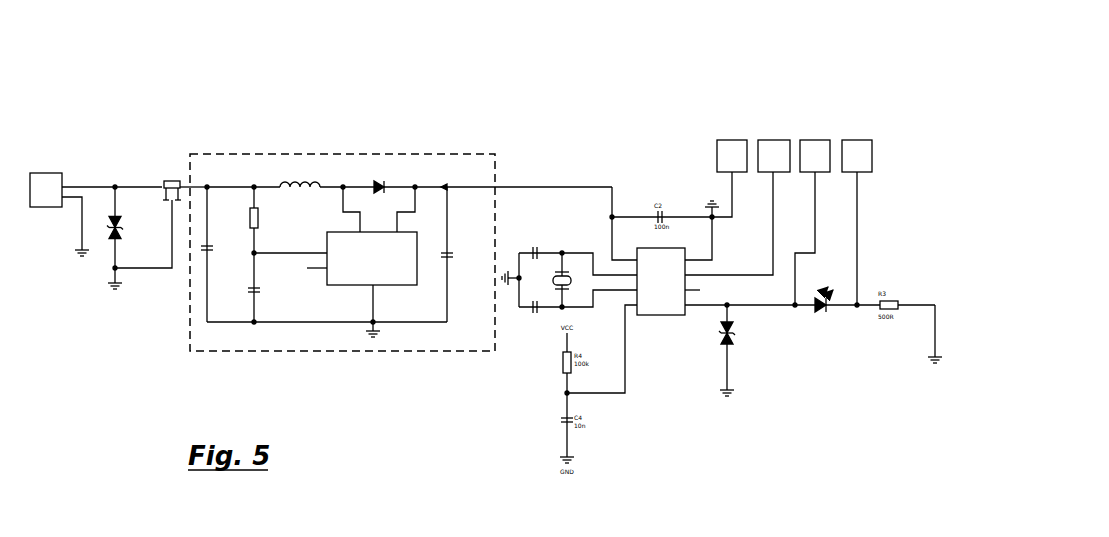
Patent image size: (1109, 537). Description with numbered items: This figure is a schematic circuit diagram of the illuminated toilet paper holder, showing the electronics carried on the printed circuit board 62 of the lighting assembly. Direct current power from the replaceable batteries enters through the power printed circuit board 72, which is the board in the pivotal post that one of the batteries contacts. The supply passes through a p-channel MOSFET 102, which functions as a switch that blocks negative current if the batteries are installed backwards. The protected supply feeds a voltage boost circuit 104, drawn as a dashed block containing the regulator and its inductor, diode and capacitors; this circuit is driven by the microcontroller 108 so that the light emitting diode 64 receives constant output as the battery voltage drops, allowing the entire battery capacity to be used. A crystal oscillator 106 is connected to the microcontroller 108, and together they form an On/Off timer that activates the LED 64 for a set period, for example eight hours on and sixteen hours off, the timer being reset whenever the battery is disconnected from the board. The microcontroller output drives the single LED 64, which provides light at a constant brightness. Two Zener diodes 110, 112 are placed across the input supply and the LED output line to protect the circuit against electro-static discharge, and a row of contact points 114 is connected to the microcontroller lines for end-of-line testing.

The printed circuit board 62 is at (698, 107).
The light emitting diode 64 is at (855, 342).
The power printed circuit board 72 is at (48, 155).
The p-channel MOSFET 102 is at (173, 152).
The voltage boost circuit 104 is at (318, 152).
The crystal oscillator 106 is at (552, 233).
The microcontroller 108 is at (650, 342).
The Zener diode 110 is at (108, 250).
The Zener diode 112 is at (750, 350).
The contact points 114 is at (877, 155).